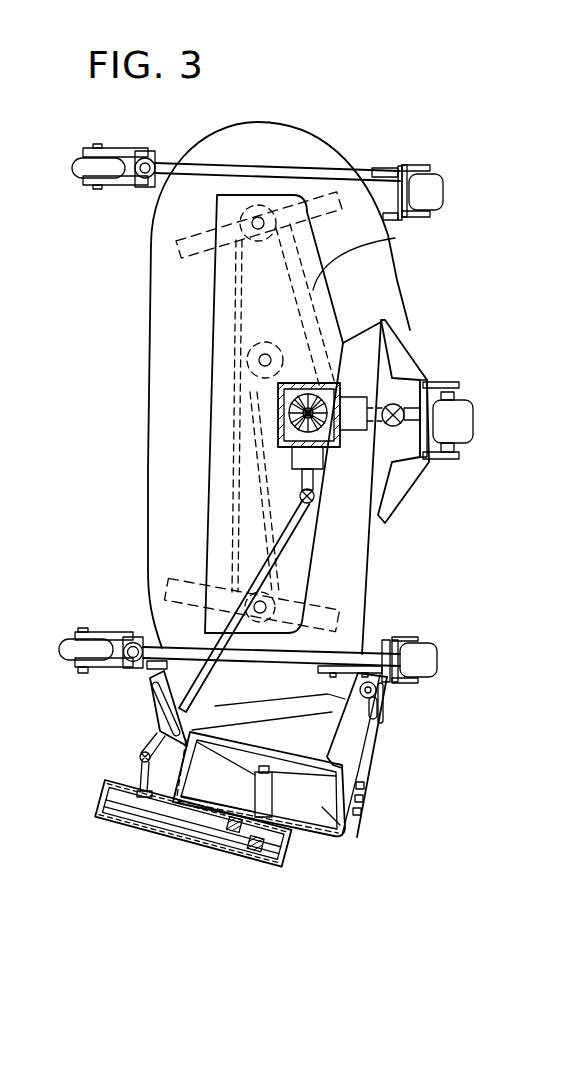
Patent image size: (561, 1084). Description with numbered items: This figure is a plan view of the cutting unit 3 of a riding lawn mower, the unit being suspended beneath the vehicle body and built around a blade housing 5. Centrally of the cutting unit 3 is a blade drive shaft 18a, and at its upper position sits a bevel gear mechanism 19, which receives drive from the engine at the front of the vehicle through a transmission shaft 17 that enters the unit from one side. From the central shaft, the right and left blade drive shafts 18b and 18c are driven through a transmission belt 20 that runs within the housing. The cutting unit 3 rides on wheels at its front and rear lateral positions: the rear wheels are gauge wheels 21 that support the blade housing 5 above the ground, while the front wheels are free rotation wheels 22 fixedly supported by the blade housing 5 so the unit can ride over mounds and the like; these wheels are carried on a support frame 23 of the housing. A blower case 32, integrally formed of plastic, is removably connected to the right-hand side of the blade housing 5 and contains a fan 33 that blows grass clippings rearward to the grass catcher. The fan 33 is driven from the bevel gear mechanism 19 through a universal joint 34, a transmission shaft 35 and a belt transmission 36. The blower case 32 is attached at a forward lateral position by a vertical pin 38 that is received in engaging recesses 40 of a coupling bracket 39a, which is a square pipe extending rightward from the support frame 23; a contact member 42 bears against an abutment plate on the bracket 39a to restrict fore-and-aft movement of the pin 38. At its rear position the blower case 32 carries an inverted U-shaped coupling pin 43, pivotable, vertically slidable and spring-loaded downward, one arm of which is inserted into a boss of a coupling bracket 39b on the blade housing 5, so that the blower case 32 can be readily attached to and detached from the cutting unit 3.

The cutting unit 3 is at (379, 139).
The blade housing 5 is at (152, 507).
The transmission shaft 17 is at (413, 380).
The blade drive shaft 18a is at (318, 302).
The right blade drive shaft 18b is at (300, 580).
The left blade drive shaft 18c is at (240, 214).
The bevel gear mechanism 19 is at (362, 488).
The transmission belt 20 is at (395, 238).
The gauge wheels 21 is at (76, 174).
The free rotation wheels 22 is at (433, 181).
The support frame 23 is at (313, 166).
The blower case 32 is at (328, 838).
The fan 33 is at (348, 836).
The universal joint 34 is at (138, 758).
The transmission shaft 35 is at (292, 537).
The belt transmission 36 is at (180, 821).
The vertical pin 38 is at (357, 687).
The coupling bracket 39a is at (380, 712).
The coupling bracket 39b is at (152, 672).
The engaging recesses 40 is at (375, 733).
The contact member 42 is at (380, 702).
The coupling pin 43 is at (190, 712).